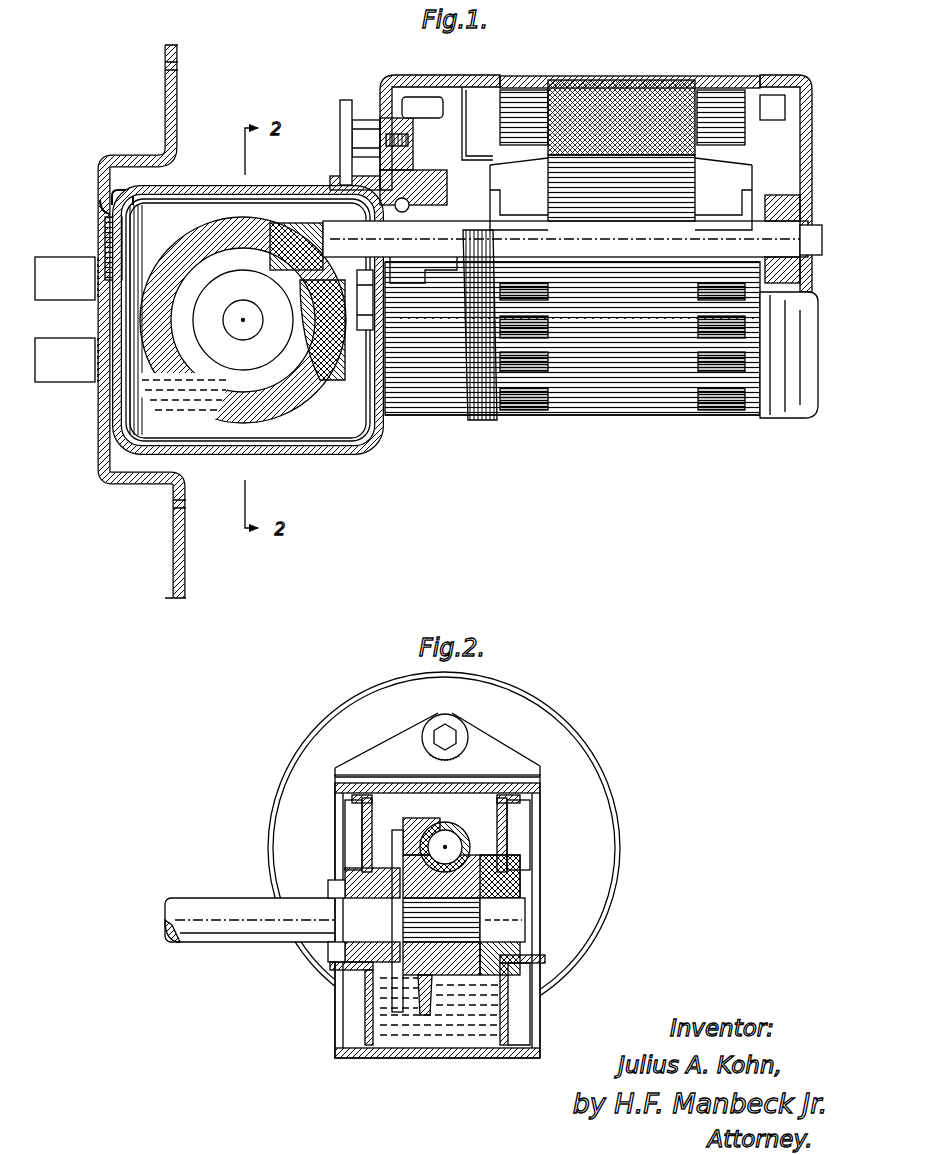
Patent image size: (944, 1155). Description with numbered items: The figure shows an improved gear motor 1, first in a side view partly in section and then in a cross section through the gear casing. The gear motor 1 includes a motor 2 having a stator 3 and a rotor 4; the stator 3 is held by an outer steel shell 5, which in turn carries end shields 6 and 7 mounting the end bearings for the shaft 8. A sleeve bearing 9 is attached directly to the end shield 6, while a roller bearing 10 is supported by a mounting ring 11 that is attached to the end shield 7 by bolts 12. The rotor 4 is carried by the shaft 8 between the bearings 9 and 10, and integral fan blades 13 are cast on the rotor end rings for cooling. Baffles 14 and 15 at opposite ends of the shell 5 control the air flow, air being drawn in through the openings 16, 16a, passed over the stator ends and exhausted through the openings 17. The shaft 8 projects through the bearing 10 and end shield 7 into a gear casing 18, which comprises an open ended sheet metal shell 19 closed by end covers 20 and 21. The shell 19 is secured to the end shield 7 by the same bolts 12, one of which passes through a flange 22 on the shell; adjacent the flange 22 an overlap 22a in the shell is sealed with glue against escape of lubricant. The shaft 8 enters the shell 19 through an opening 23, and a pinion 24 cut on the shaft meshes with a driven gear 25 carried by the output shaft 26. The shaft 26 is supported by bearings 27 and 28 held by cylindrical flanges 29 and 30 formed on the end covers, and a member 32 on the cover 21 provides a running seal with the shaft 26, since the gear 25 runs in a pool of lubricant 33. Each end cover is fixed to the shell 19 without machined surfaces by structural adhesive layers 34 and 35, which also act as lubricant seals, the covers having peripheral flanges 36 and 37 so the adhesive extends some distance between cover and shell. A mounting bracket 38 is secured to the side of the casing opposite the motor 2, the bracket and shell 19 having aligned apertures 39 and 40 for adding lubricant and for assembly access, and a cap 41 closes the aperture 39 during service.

In FIG. 1, the gear motor 1 is at (327, 71).
In FIG. 1, the motor 2 is at (606, 420).
In FIG. 2, the motor 2 is at (594, 742).
In FIG. 1, the stator 3 is at (620, 100).
In FIG. 1, the rotor 4 is at (632, 226).
In FIG. 1, the outer steel shell 5 is at (580, 76).
In FIG. 1, the end shield 6 is at (800, 122).
In FIG. 1, the end shield 7 is at (432, 75).
In FIG. 1, the shaft 8 is at (805, 236).
In FIG. 1, the sleeve bearing 9 is at (795, 195).
In FIG. 1, the roller bearing 10 is at (408, 214).
In FIG. 1, the mounting ring 11 is at (415, 172).
In FIG. 1, the bolts 12 is at (363, 138).
In FIG. 2, the bolts 12 is at (446, 735).
In FIG. 1, the fan blades 13 is at (505, 185).
In FIG. 1, the baffle 14 is at (775, 112).
In FIG. 1, the baffle 15 is at (465, 145).
In FIG. 1, the opening 16 is at (802, 167).
In FIG. 1, the opening 16a is at (410, 97).
In FIG. 1, the openings 17 is at (512, 90).
In FIG. 1, the gear casing 18 is at (337, 460).
In FIG. 2, the gear casing 18 is at (488, 1064).
In FIG. 1, the shell 19 is at (197, 186).
In FIG. 2, the shell 19 is at (405, 1060).
In FIG. 2, the end cover 20 is at (508, 835).
In FIG. 2, the end cover 21 is at (362, 832).
In FIG. 1, the flange 22 is at (345, 106).
In FIG. 2, the flange 22 is at (503, 748).
In FIG. 1, the overlap 22a is at (332, 178).
In FIG. 1, the opening 23 is at (340, 210).
In FIG. 1, the pinion 24 is at (290, 262).
In FIG. 2, the pinion 24 is at (452, 833).
In FIG. 1, the driven gear 25 is at (325, 362).
In FIG. 2, the driven gear 25 is at (418, 990).
In FIG. 1, the output shaft 26 is at (243, 320).
In FIG. 2, the output shaft 26 is at (206, 898).
In FIG. 2, the bearing 27 is at (528, 950).
In FIG. 2, the bearing 28 is at (330, 886).
In FIG. 2, the cylindrical flange 29 is at (532, 964).
In FIG. 2, the cylindrical flange 30 is at (352, 875).
In FIG. 2, the running seal member 32 is at (330, 947).
In FIG. 2, the lubricant 33 is at (452, 1022).
In FIG. 2, the adhesive layer 34 is at (518, 1060).
In FIG. 2, the adhesive layer 35 is at (362, 1050).
In FIG. 2, the peripheral flange 36 is at (524, 790).
In FIG. 2, the peripheral flange 37 is at (360, 792).
In FIG. 1, the mounting bracket 38 is at (100, 477).
In FIG. 1, the aperture 39 is at (100, 207).
In FIG. 1, the aperture 40 is at (128, 193).
In FIG. 1, the cap 41 is at (110, 240).